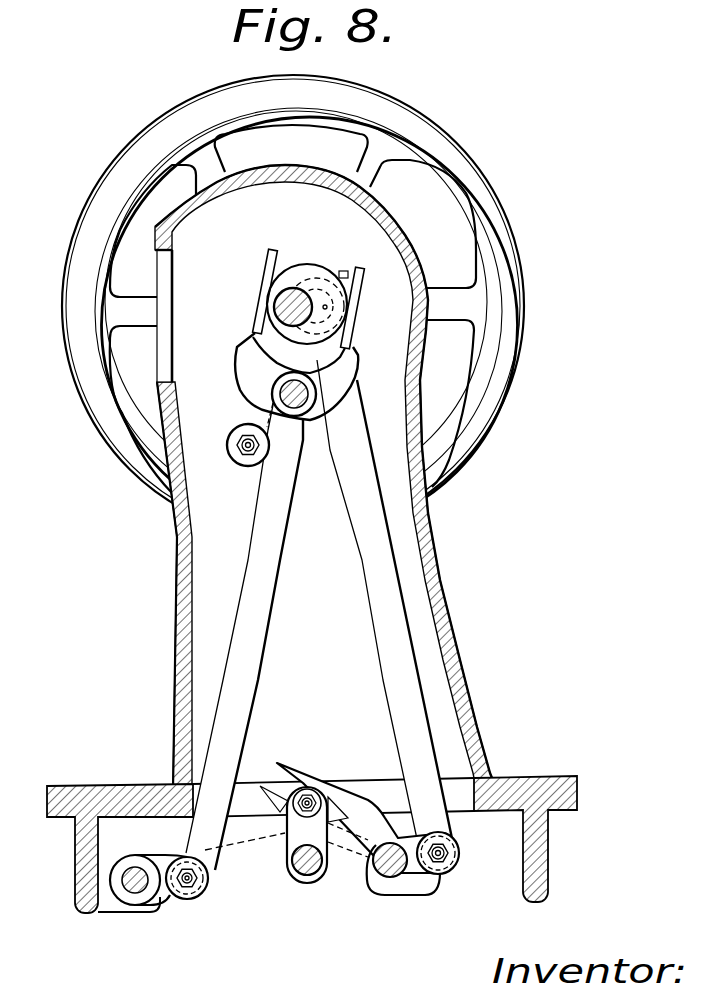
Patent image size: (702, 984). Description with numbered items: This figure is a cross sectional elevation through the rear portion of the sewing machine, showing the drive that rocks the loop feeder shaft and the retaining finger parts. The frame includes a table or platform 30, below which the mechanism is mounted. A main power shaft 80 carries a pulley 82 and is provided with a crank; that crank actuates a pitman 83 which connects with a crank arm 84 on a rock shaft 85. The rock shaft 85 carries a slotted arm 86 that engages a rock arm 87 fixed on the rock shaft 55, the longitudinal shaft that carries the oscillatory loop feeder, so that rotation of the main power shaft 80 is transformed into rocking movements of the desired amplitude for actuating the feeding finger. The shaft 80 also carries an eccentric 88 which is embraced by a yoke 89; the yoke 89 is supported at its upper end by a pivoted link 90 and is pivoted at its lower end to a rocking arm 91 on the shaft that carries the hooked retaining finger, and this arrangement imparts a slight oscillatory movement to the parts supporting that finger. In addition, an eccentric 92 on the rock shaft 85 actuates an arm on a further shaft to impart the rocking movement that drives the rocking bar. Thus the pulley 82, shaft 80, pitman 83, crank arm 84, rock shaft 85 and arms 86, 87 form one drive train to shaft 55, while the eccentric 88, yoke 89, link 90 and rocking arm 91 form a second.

The table or platform 30 is at (507, 780).
The rock shaft 55 is at (307, 877).
The main power shaft 80 is at (280, 300).
The pulley 82 is at (513, 228).
The pitman 83 is at (365, 512).
The crank arm 84 is at (418, 867).
The rock shaft 85 is at (393, 873).
The slotted arm 86 is at (342, 797).
The rock arm 87 is at (287, 843).
The eccentric 88 is at (297, 272).
The yoke 89 is at (252, 370).
The pivoted link 90 is at (250, 414).
The rocking arm 91 is at (172, 897).
The eccentric 92 is at (140, 890).